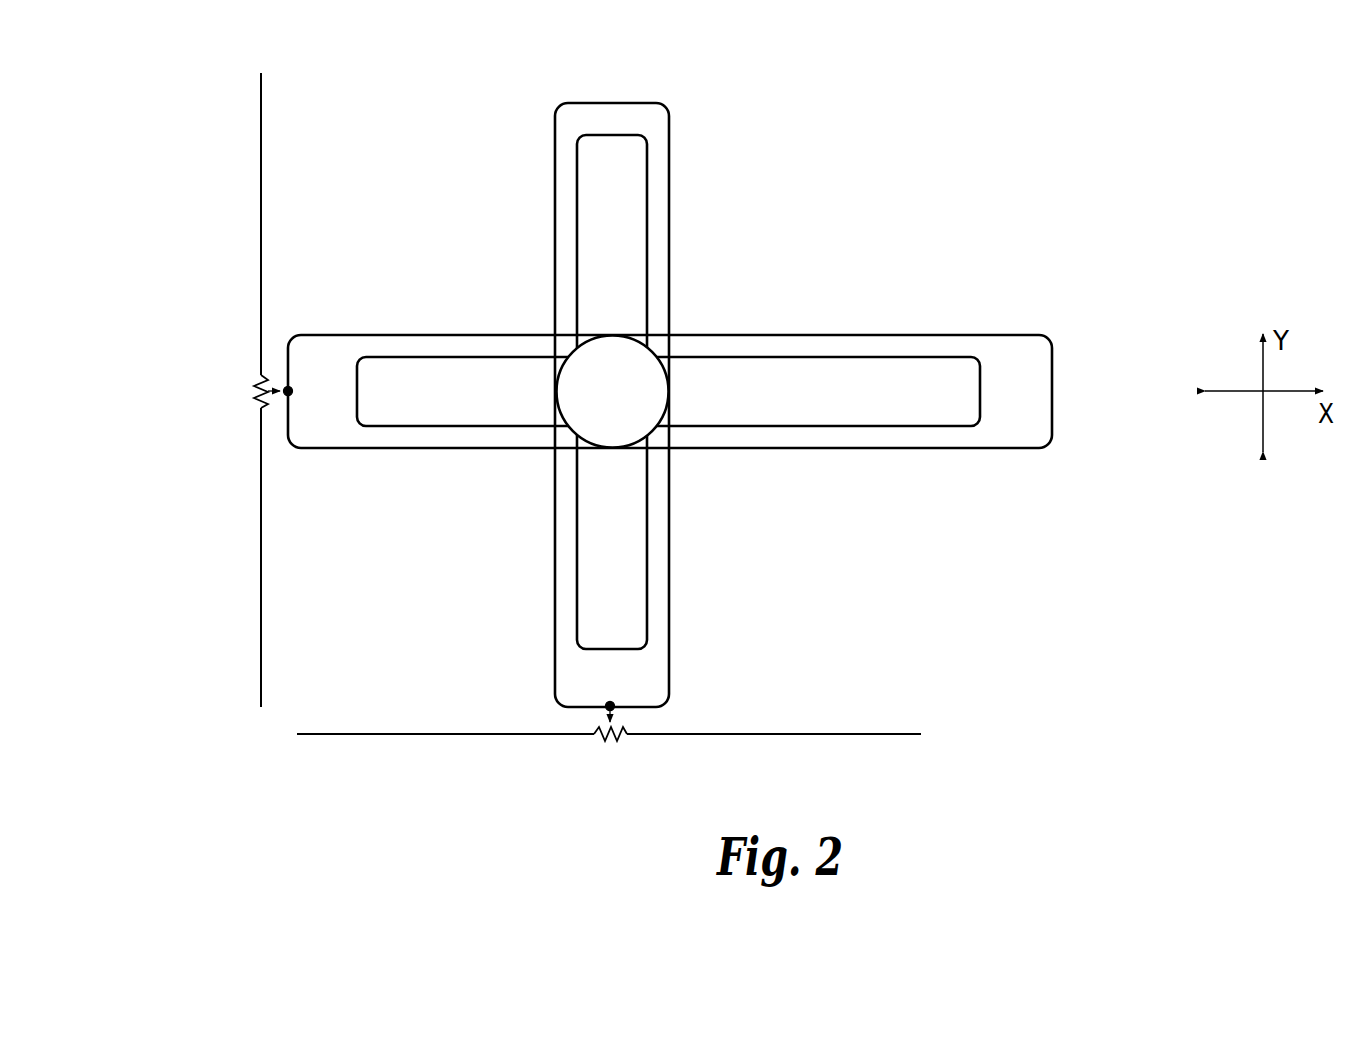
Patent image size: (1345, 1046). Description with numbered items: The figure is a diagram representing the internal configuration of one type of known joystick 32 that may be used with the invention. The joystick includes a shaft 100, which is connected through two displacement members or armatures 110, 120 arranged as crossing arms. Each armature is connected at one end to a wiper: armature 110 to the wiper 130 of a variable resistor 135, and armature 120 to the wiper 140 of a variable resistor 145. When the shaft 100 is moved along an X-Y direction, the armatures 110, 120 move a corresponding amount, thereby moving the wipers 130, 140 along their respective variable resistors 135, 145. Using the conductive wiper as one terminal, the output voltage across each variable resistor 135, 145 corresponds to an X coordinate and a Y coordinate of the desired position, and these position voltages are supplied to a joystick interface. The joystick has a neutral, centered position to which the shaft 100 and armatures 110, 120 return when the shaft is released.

The joystick 32 is at (858, 180).
The shaft 100 is at (557, 377).
The armature 110 is at (808, 452).
The armature 120 is at (671, 572).
The wiper 130 is at (284, 389).
The variable resistor 135 is at (261, 375).
The wiper 140 is at (606, 716).
The variable resistor 145 is at (596, 738).